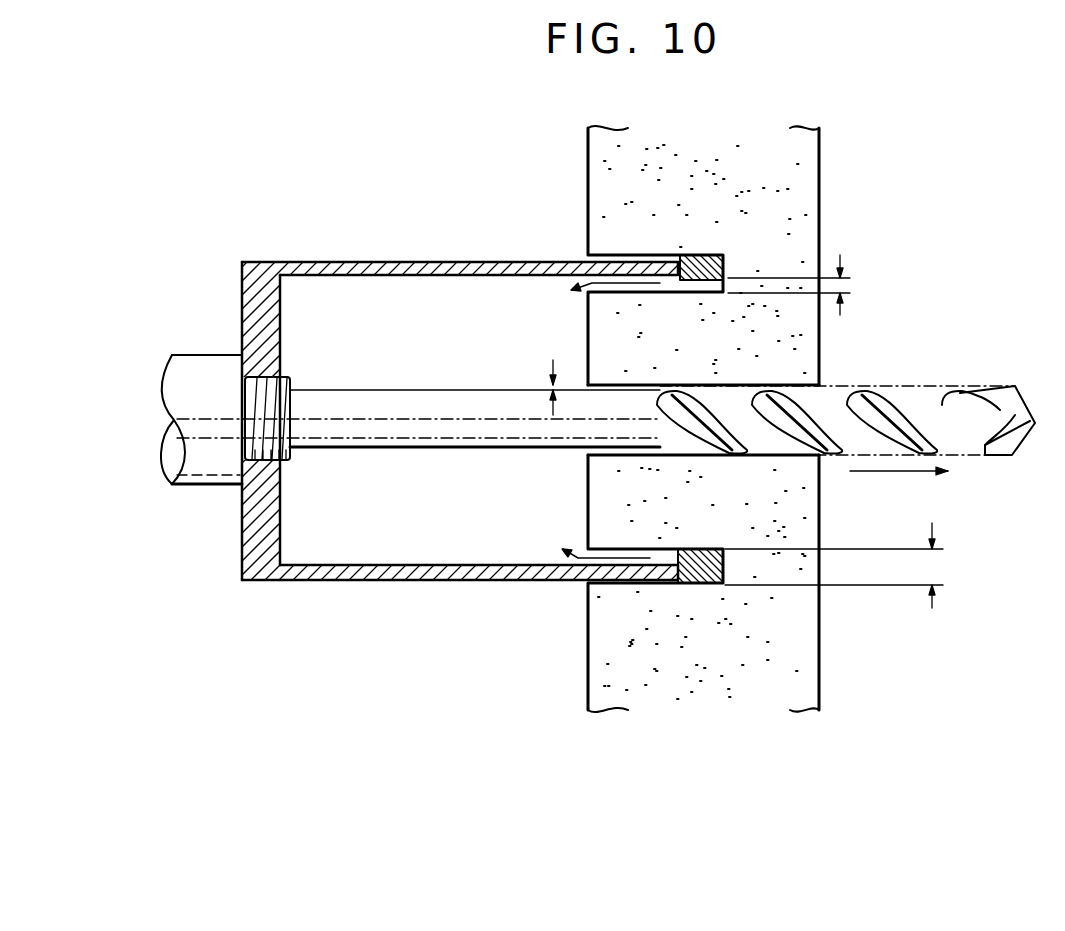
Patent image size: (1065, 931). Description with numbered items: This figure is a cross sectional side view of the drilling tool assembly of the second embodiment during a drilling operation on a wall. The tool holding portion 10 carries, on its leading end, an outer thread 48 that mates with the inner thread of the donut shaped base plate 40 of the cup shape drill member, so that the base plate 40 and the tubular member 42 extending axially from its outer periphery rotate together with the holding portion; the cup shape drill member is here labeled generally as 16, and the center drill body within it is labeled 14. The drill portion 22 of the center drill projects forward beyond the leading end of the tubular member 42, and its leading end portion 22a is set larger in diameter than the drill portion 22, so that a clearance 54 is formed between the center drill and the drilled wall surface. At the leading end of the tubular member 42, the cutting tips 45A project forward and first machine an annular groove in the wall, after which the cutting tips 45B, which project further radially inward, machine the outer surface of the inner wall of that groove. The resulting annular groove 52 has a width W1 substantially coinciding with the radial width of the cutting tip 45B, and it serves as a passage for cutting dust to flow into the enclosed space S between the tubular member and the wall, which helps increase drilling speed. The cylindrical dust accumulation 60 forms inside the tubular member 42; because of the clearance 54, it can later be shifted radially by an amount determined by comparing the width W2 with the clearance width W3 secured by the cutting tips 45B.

The tool holding portion 10 is at (204, 475).
The rod 14 is at (533, 405).
The cup member 16 is at (452, 352).
The drill portion 22 is at (892, 403).
The leading end portion 22a is at (1000, 395).
The base plate 40 is at (249, 280).
The tubular member 42 is at (347, 262).
The cutting tip 45A is at (724, 258).
The cutting tip 45B is at (725, 566).
The outer thread 48 is at (250, 393).
The annular groove 52 is at (610, 278).
The clearance 54 is at (586, 452).
The dust accumulation 60 is at (603, 522).
The enclosed space S is at (358, 527).
The width of annular groove W1 is at (859, 565).
The width W2 is at (812, 285).
The width of clearance W3 is at (561, 372).